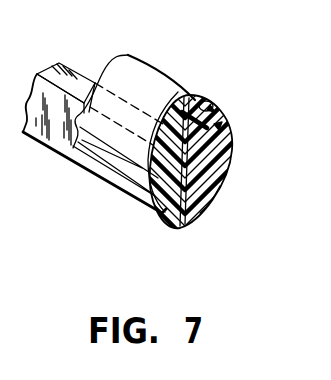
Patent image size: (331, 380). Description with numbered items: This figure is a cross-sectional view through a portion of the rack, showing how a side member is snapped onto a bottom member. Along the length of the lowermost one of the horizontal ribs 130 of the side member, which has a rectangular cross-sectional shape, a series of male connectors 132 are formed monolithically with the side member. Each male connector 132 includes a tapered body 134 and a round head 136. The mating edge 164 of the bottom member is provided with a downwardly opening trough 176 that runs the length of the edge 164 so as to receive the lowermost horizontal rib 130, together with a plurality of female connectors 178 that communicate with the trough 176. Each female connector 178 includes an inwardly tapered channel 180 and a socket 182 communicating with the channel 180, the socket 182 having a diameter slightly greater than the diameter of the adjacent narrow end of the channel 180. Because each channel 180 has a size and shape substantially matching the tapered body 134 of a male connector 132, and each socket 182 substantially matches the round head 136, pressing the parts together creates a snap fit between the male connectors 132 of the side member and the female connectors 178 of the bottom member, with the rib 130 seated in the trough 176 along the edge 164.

The horizontal rib 130 is at (164, 214).
The male connector 132 is at (157, 128).
The tapered body 134 is at (221, 175).
The round head 136 is at (215, 108).
The edge 164 is at (229, 148).
The trough 176 is at (202, 213).
The female connector 178 is at (222, 127).
The channel 180 is at (165, 212).
The socket 182 is at (207, 102).